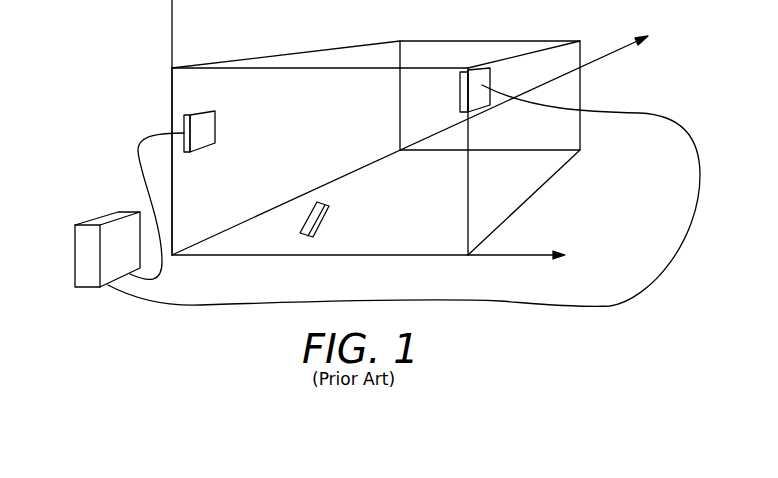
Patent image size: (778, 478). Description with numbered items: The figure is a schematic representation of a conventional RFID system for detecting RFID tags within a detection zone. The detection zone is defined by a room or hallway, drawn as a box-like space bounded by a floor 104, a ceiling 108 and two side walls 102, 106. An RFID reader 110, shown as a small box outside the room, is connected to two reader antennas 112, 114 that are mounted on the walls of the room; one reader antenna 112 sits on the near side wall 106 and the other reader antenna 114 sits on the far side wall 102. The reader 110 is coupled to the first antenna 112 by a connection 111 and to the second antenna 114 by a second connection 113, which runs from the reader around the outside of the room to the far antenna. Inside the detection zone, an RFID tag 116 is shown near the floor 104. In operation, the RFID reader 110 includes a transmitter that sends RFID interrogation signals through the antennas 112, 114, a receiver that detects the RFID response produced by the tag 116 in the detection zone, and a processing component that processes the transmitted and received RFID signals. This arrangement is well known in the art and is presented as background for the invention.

The side wall 102 is at (543, 164).
The floor 104 is at (454, 198).
The side wall 106 is at (294, 113).
The ceiling 108 is at (350, 53).
The RFID reader 110 is at (134, 260).
The cable 111 is at (150, 133).
The reader antenna 112 is at (229, 138).
The cable 113 is at (607, 305).
The reader antenna 114 is at (445, 84).
The RFID tag 116 is at (318, 226).